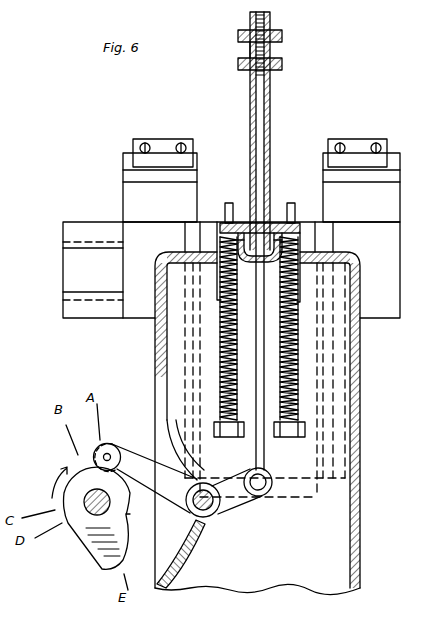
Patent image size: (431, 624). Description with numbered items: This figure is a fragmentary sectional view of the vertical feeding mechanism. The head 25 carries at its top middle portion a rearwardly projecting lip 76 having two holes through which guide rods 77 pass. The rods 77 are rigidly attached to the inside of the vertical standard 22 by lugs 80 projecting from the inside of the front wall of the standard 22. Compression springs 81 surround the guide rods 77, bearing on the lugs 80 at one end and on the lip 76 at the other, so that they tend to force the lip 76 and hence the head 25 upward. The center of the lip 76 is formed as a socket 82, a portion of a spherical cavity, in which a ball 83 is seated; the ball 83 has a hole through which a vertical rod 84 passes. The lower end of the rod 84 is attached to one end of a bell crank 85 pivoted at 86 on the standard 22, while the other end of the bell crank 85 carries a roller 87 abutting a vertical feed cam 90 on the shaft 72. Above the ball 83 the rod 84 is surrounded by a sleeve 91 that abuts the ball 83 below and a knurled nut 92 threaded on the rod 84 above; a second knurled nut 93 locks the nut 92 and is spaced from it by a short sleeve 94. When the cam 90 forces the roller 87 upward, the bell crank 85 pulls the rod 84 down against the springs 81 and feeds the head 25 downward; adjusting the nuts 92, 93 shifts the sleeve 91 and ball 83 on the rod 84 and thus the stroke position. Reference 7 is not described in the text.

The vertical standard 22 is at (361, 396).
The head 25 is at (388, 258).
The shaft 72 is at (90, 512).
The lip 76 is at (270, 228).
The guide rods 77 is at (226, 207).
The lugs 80 is at (234, 437).
The compression springs 81 is at (222, 360).
The socket 82 is at (249, 228).
The ball 83 is at (298, 230).
The vertical rod 84 is at (268, 110).
The bell crank 85 is at (136, 456).
The pivot 86 is at (204, 518).
The roller 87 is at (108, 445).
The vertical feed cam 90 is at (103, 556).
The sleeve 91 is at (262, 131).
The knurled nut 92 is at (280, 64).
The second knurled nut 93 is at (282, 37).
The short sleeve 94 is at (256, 47).
The lever position 7 is at (130, 514).